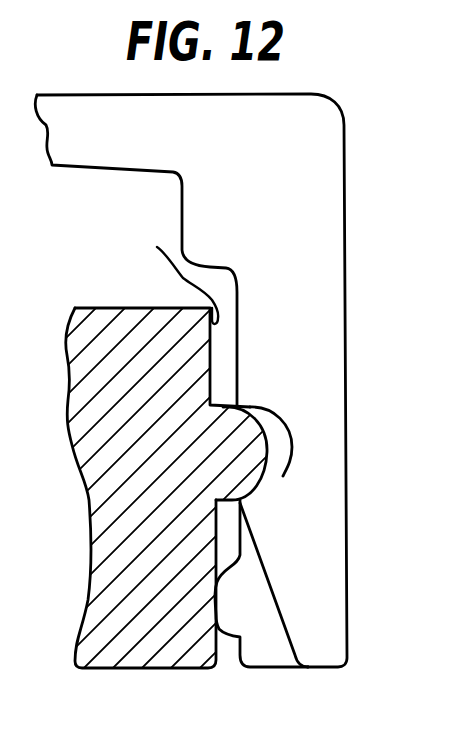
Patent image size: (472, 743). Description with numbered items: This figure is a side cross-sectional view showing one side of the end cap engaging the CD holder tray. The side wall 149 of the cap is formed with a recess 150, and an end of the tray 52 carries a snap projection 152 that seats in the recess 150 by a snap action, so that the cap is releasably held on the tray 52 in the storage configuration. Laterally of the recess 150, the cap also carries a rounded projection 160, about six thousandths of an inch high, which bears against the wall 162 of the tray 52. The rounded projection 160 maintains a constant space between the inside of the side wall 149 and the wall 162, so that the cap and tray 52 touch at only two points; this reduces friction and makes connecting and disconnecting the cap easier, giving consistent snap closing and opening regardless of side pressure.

The side wall 149 is at (334, 266).
The tray 52 is at (91, 496).
The projection 152 is at (243, 431).
The recess 150 is at (283, 476).
The wall 162 is at (170, 277).
The rounded projection 160 is at (234, 601).